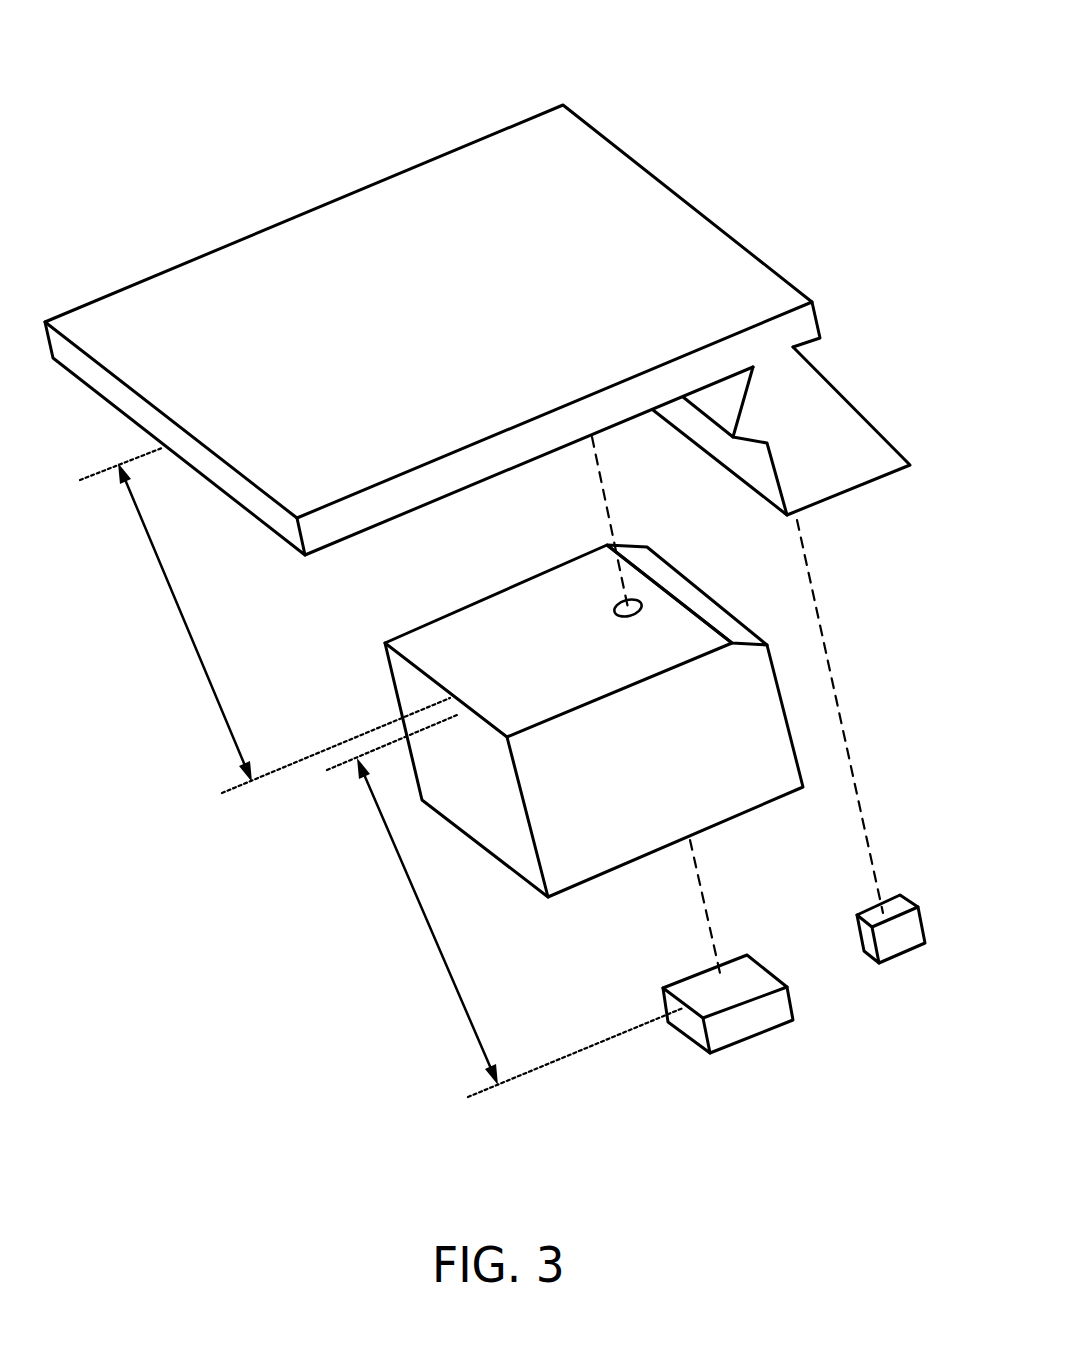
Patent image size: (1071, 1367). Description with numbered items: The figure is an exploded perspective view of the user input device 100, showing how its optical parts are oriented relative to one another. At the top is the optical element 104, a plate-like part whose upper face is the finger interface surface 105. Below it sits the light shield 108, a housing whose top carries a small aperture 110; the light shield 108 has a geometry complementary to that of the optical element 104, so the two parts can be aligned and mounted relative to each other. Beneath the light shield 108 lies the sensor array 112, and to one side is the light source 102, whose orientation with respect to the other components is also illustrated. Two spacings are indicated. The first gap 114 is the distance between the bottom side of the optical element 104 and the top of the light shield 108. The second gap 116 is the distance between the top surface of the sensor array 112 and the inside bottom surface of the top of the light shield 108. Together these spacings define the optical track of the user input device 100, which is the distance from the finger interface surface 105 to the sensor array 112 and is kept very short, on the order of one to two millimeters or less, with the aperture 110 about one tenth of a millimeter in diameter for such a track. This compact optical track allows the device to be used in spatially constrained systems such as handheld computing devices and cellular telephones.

The user input device 100 is at (166, 58).
The light source 102 is at (903, 957).
The optical element 104 is at (180, 265).
The finger interface surface 105 is at (479, 280).
The light shield 108 is at (497, 842).
The aperture 110 is at (611, 593).
The sensor array 112 is at (763, 1033).
The first gap 114 is at (213, 690).
The second gap 116 is at (422, 917).